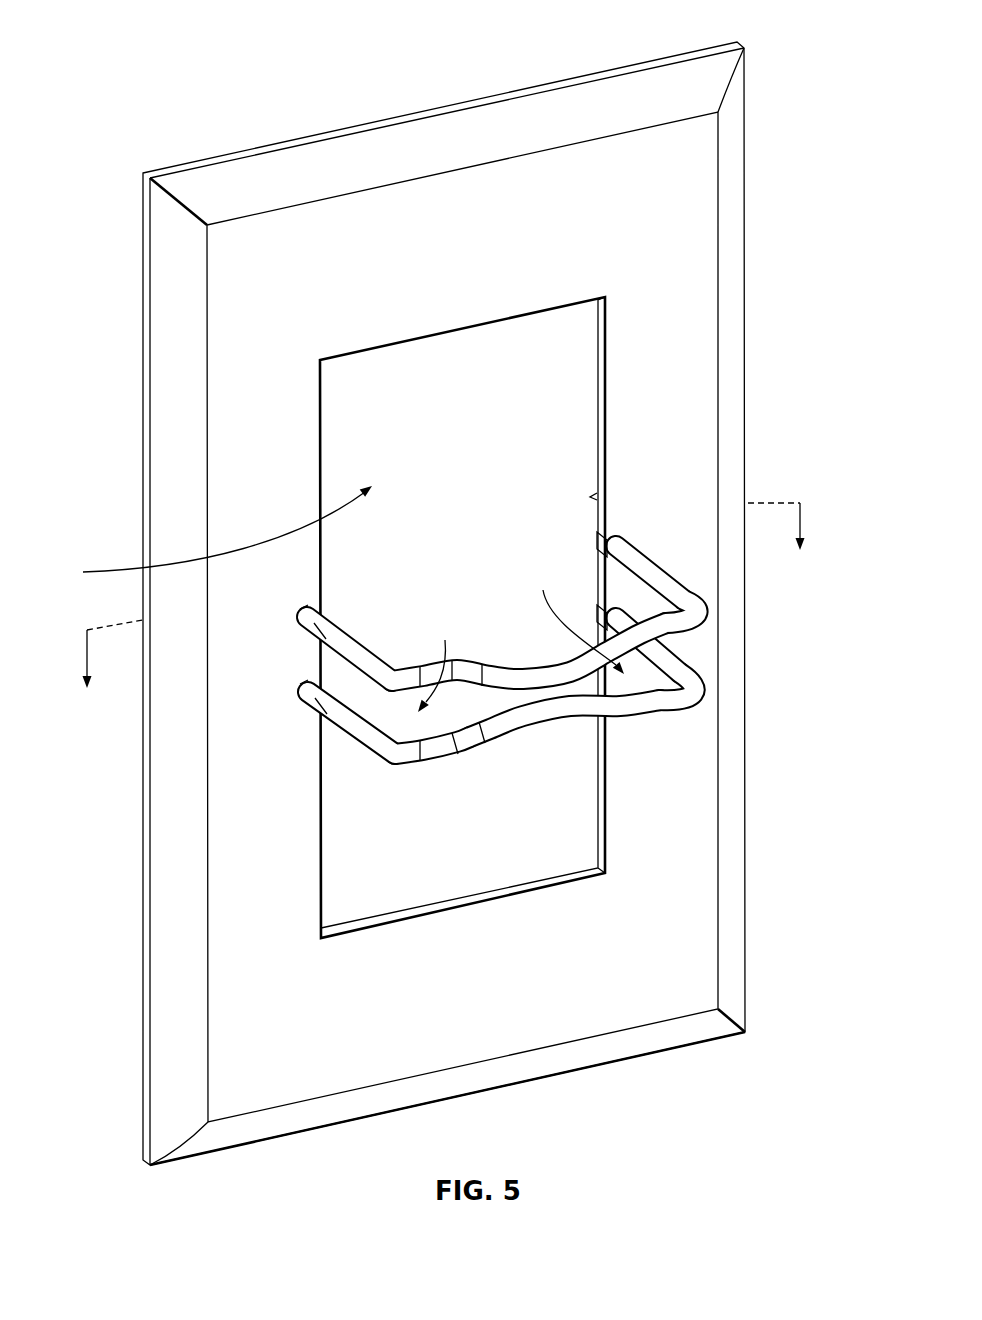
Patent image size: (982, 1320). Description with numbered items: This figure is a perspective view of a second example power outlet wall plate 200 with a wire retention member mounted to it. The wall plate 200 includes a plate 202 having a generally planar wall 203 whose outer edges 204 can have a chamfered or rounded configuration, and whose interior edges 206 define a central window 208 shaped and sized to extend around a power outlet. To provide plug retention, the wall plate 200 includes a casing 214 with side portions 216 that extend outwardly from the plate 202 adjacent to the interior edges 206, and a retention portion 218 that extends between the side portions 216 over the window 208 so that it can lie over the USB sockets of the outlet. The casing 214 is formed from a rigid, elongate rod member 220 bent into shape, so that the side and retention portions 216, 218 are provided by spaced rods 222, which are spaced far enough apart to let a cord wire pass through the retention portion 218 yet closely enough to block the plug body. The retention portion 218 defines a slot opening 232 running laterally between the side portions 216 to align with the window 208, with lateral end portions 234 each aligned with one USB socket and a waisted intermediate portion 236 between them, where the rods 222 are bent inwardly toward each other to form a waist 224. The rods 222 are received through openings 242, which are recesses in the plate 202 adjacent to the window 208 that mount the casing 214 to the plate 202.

The power outlet wall plate 200 is at (146, 70).
The plate 202 is at (703, 222).
The planar wall 203 is at (687, 260).
The outer edges 204 is at (370, 150).
The interior edges 206 is at (513, 313).
The central window 208 is at (202, 537).
The casing 214 is at (672, 588).
The side portions 216 is at (335, 712).
The retention portion 218 is at (437, 758).
The rod member 220 is at (360, 738).
The rods 222 is at (633, 560).
The waist 224 is at (520, 725).
The slot opening 232 is at (660, 713).
The lateral end portions 234 is at (521, 637).
The waisted intermediate portion 236 is at (545, 682).
The openings 242 is at (597, 542).